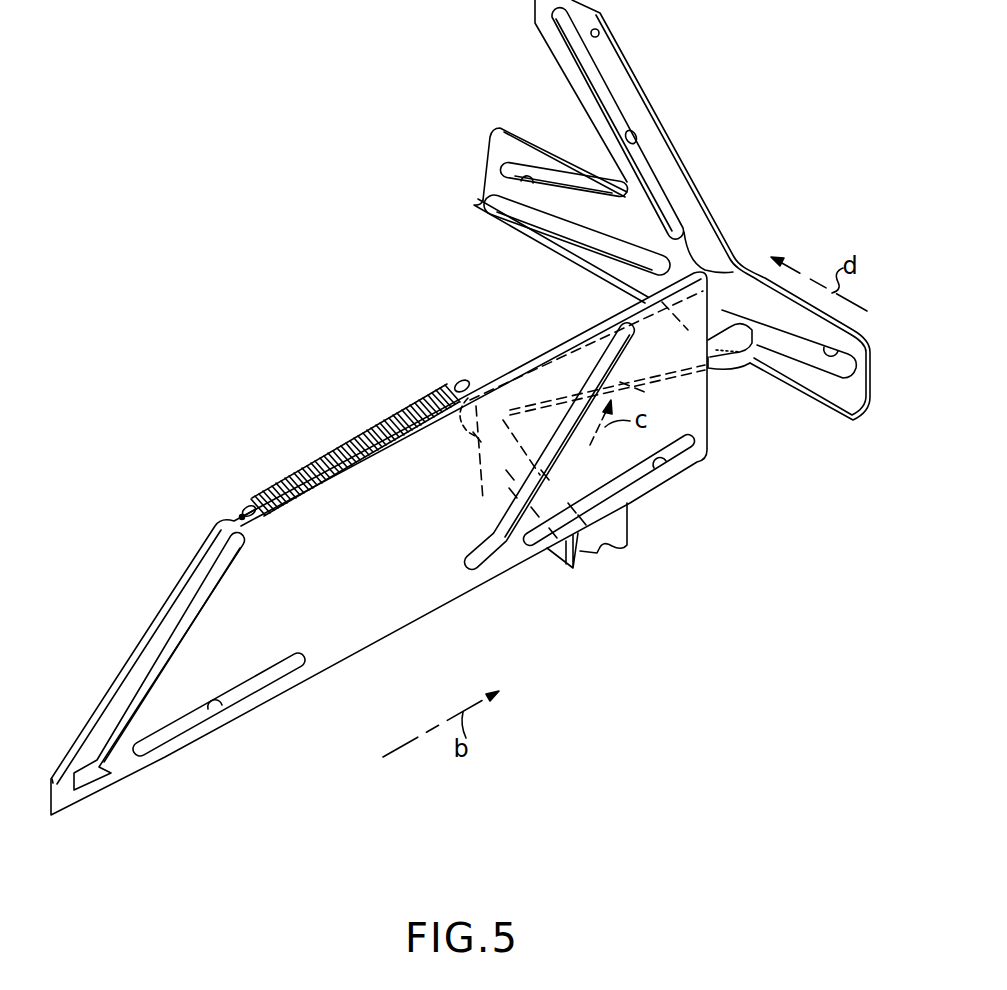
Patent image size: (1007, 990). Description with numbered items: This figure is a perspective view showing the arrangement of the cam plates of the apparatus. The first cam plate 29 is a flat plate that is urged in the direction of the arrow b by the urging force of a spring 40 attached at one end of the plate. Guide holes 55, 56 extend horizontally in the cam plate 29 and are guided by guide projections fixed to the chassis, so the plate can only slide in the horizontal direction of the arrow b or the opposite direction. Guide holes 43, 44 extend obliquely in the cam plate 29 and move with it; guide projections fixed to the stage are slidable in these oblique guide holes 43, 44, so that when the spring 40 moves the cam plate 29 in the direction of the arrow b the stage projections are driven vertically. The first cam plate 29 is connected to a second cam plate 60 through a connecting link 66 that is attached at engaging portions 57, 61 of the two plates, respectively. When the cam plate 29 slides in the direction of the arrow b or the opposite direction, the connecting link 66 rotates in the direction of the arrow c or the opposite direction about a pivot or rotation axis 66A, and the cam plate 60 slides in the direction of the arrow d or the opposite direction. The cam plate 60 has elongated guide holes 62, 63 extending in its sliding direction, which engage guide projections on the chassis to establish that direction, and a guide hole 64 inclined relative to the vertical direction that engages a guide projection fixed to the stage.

The first cam plate 29 is at (328, 655).
The spring 40 is at (316, 460).
The guide hole 43 is at (225, 594).
The guide hole 44 is at (554, 446).
The guide hole 55 is at (214, 715).
The guide hole 56 is at (658, 467).
The engaging portion 57 is at (620, 550).
The second cam plate 60 is at (637, 80).
The engaging portion 61 is at (728, 372).
The guide hole 62 is at (528, 180).
The guide hole 63 is at (840, 355).
The guide hole 64 is at (637, 141).
The connecting link 66 is at (487, 482).
The pivot 66A is at (477, 440).